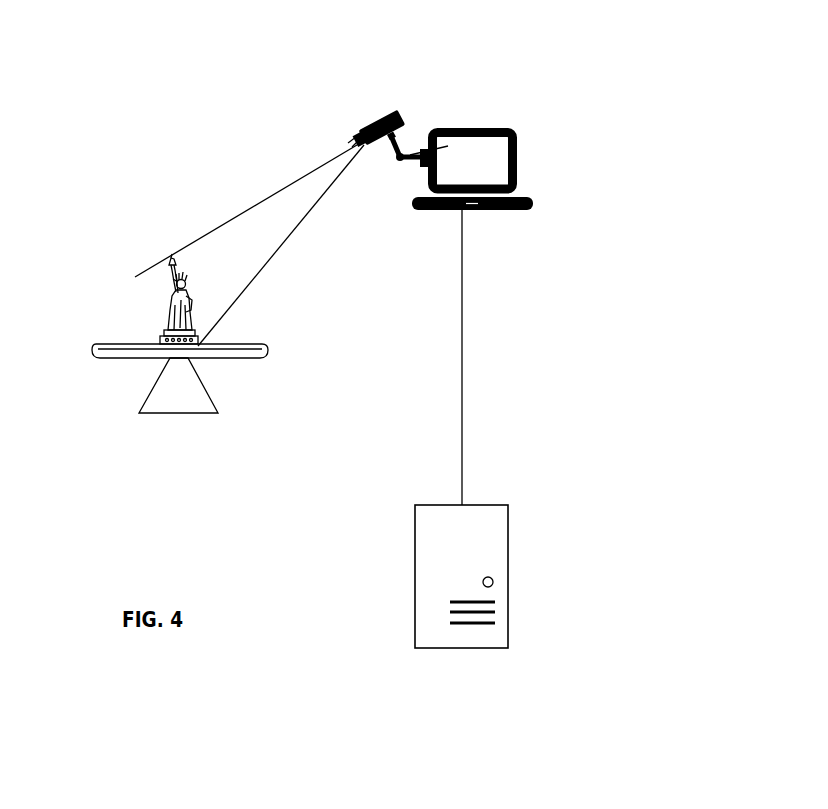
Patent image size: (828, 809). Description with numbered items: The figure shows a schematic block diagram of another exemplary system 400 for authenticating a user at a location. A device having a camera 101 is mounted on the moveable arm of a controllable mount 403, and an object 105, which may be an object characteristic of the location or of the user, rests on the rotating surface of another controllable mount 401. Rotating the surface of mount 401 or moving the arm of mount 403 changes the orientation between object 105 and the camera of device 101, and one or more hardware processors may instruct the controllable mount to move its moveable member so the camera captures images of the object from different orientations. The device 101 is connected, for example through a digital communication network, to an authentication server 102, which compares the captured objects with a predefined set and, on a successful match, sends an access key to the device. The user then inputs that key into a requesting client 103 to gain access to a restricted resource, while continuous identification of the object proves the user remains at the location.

The device having a camera 101 is at (382, 122).
The controllable mount having a moveable arm 403 is at (395, 101).
The requesting client 103 is at (555, 158).
The system 400 is at (514, 357).
The authentication server 102 is at (462, 624).
The object 105 is at (158, 302).
The controllable mount having a rotating surface 401 is at (180, 412).